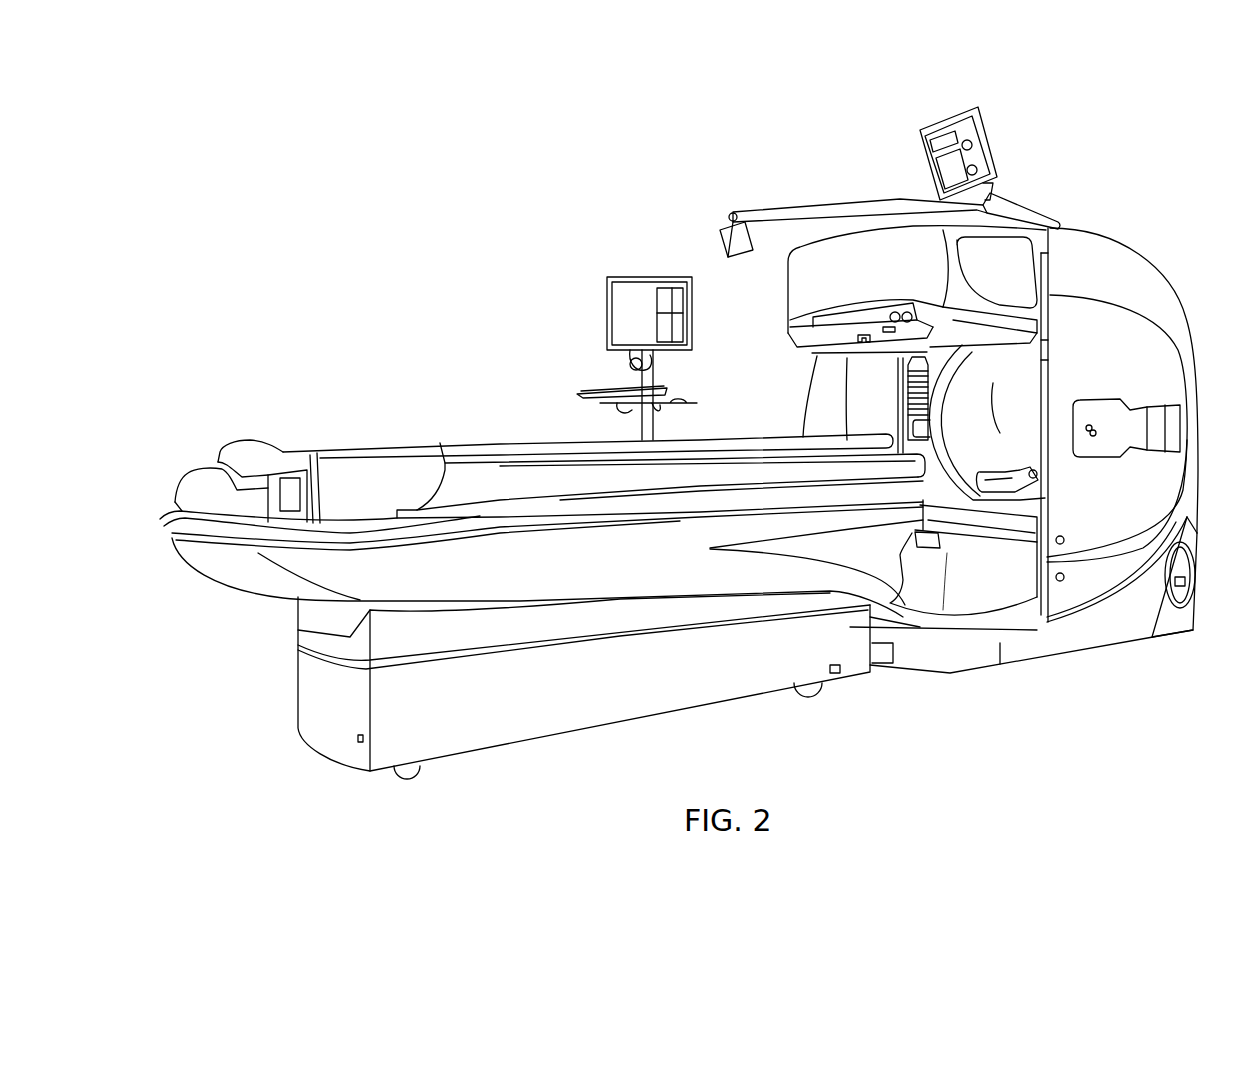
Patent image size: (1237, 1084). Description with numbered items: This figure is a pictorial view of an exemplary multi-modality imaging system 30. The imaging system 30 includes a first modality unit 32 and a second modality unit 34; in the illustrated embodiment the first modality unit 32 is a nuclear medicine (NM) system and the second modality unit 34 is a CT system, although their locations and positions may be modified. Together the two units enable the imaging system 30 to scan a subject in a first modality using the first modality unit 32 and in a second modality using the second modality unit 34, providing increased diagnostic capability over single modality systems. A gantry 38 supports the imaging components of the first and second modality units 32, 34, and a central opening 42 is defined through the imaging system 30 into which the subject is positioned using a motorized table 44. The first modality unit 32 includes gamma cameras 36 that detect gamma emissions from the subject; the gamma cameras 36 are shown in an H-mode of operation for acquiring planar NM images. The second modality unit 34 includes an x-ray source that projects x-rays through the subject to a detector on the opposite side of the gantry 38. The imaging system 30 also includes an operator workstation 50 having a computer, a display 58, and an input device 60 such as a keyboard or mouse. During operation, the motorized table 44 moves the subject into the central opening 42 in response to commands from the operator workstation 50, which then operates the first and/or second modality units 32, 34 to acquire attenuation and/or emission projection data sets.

The multi-modality imaging system 30 is at (1139, 191).
The first modality unit 32 is at (955, 646).
The second modality unit 34 is at (1148, 666).
The gamma cameras 36 is at (825, 281).
The gantry 38 is at (1062, 222).
The central opening 42 is at (1024, 422).
The motorized table 44 is at (316, 618).
The operator workstation 50 is at (630, 262).
The display 58 is at (627, 308).
The input device 60 is at (586, 390).